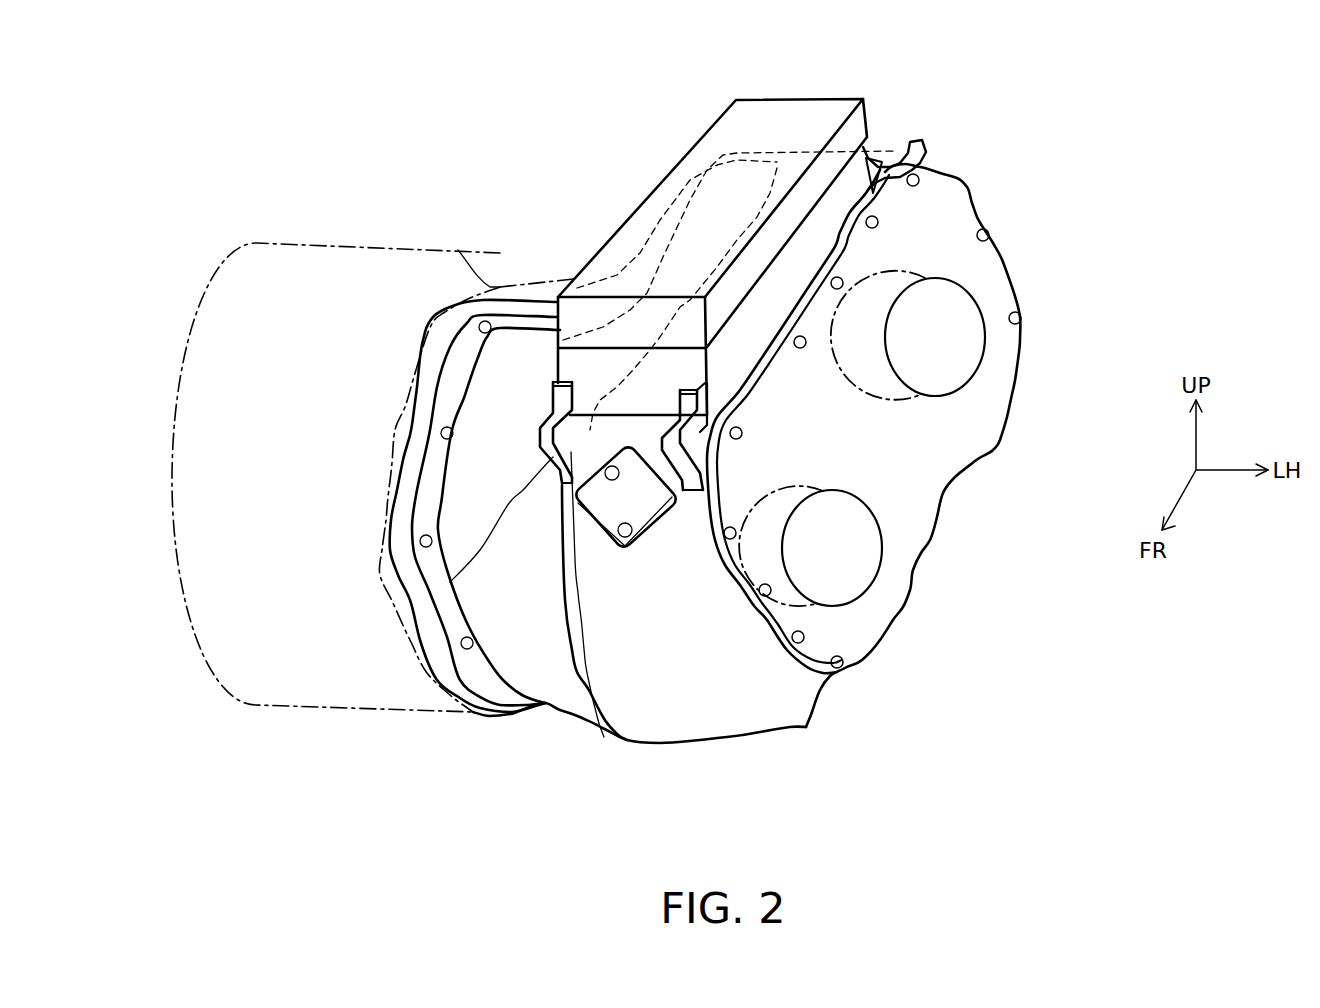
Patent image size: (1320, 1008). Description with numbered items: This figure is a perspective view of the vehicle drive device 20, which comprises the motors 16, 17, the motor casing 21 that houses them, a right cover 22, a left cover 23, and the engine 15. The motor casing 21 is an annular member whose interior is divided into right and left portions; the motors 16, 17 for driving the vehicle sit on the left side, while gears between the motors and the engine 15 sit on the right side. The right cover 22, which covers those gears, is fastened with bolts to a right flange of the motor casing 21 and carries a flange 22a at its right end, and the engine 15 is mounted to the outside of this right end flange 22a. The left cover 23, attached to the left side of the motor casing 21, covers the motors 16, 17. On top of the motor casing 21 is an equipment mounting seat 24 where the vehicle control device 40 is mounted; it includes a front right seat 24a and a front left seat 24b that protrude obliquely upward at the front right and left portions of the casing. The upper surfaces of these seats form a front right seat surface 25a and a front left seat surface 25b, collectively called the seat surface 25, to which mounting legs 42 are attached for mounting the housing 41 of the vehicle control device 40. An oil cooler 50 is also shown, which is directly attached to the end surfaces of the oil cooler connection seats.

The engine 15 is at (334, 431).
The motor 16 is at (991, 307).
The motor 17 is at (907, 546).
The vehicle drive device 20 is at (428, 173).
The motor casing 21 is at (681, 513).
The right cover 22 is at (475, 574).
The flange 22a is at (357, 536).
The left cover 23 is at (893, 445).
The equipment mounting seat 24 is at (698, 458).
The front right seat 24a is at (416, 530).
The front left seat 24b is at (867, 439).
The seat surface 25 is at (553, 432).
The front right seat surface 25a is at (552, 428).
The front left seat surface 25b is at (910, 421).
The vehicle control device 40 is at (766, 217).
The housing 41 is at (957, 130).
The mounting legs 42 is at (524, 318).
The oil cooler 50 is at (672, 620).